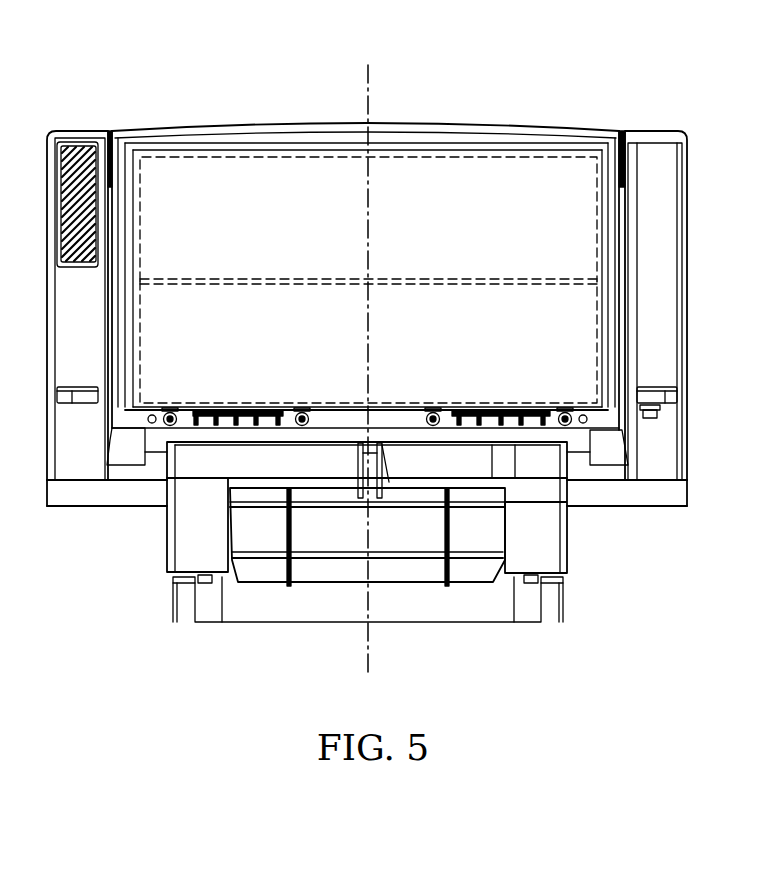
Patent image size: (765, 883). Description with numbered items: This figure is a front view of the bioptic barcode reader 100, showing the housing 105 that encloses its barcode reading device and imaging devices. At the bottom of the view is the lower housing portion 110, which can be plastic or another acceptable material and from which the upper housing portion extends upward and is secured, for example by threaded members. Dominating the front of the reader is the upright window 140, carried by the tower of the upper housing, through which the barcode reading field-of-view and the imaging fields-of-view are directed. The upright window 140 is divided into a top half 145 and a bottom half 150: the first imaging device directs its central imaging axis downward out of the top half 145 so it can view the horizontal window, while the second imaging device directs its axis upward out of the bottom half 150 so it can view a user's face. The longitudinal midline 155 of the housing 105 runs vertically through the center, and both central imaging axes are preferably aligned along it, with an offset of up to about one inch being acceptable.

The bioptic barcode reader 100 is at (115, 52).
The housing 105 is at (133, 530).
The lower housing portion 110 is at (597, 490).
The upright window 140 is at (530, 198).
The top half 145 is at (140, 191).
The bottom half 150 is at (140, 320).
The longitudinal midline 155 is at (367, 83).